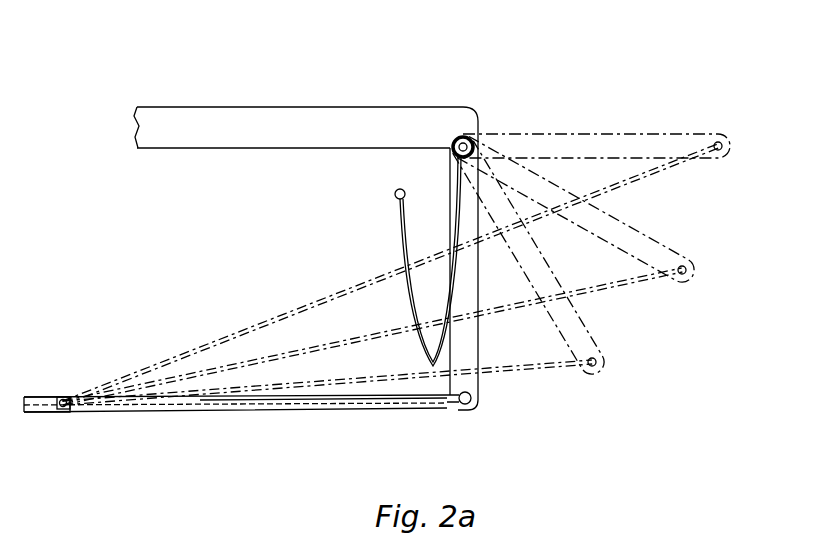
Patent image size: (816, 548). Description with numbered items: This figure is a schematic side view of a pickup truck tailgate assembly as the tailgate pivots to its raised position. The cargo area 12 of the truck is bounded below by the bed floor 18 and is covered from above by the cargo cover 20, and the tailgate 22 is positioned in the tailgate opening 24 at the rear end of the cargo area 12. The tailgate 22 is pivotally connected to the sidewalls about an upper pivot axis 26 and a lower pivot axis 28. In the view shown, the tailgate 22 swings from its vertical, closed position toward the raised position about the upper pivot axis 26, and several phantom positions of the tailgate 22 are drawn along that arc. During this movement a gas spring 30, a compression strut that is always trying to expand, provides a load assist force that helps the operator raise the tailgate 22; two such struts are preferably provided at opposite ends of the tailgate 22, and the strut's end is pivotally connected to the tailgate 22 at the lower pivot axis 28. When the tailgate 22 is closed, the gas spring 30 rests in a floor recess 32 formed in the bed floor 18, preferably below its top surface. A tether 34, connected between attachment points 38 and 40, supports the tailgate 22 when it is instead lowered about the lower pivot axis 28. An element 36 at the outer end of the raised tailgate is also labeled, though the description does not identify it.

The cargo area 12 is at (247, 258).
The bed floor 18 is at (50, 395).
The cargo cover 20 is at (363, 107).
The tailgate 22 is at (548, 132).
The tailgate opening 24 is at (412, 171).
The upper pivot axis 26 is at (475, 128).
The lower pivot axis 28 is at (462, 406).
The gas spring 30 is at (192, 345).
The floor recess 32 is at (222, 397).
The tether 34 is at (66, 409).
The arm end pivot 36 is at (716, 132).
The attachment point 38 is at (396, 197).
The attachment point 40 is at (457, 160).